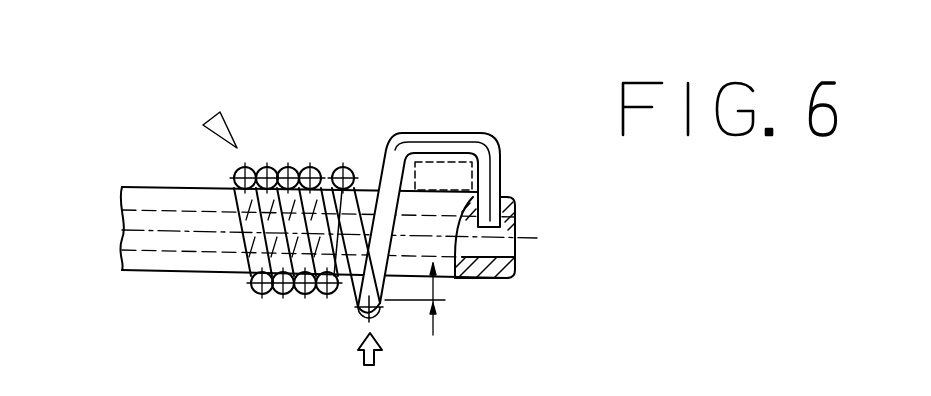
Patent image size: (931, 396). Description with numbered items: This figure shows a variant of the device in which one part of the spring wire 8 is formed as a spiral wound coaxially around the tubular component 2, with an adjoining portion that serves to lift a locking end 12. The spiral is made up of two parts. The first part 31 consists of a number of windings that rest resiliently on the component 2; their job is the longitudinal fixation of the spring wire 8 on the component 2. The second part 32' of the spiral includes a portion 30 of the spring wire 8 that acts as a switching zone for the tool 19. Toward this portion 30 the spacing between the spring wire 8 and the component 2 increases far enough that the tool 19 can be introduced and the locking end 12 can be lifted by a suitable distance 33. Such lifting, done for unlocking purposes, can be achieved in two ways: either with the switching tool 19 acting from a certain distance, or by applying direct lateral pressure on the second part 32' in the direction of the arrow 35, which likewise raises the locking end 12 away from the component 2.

The tubular component 2 is at (156, 268).
The spring wire 8 is at (211, 119).
The locking end 12 is at (502, 168).
The tool 19 is at (440, 168).
The portion 30 is at (463, 134).
The first part 31 is at (283, 293).
The second part 32' is at (315, 175).
The distance 33 is at (443, 288).
The arrow 35 is at (357, 355).